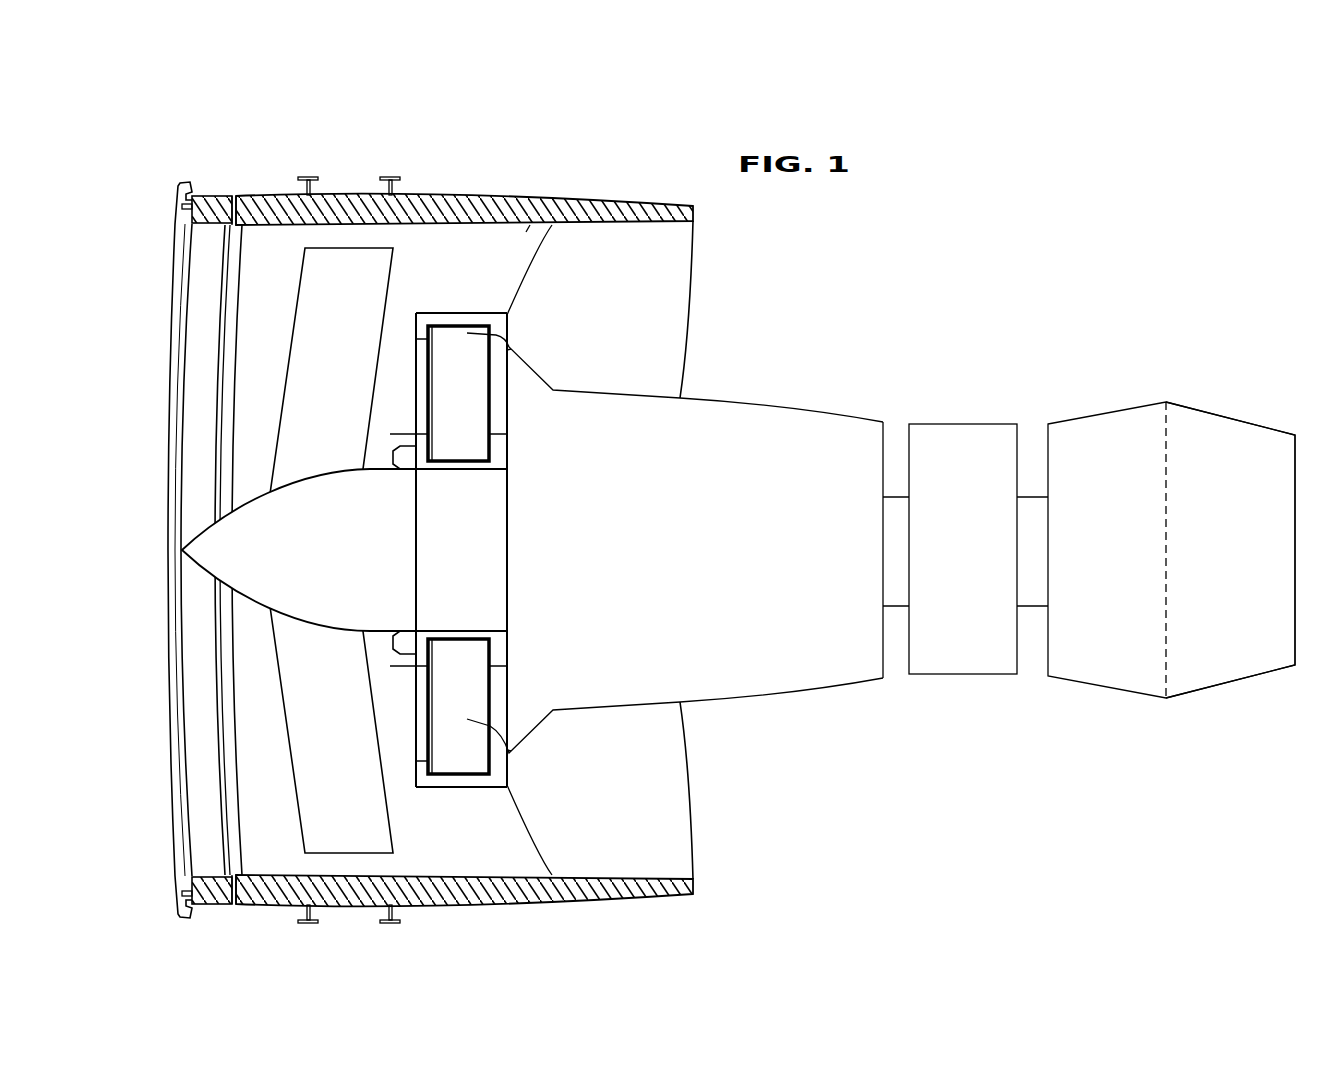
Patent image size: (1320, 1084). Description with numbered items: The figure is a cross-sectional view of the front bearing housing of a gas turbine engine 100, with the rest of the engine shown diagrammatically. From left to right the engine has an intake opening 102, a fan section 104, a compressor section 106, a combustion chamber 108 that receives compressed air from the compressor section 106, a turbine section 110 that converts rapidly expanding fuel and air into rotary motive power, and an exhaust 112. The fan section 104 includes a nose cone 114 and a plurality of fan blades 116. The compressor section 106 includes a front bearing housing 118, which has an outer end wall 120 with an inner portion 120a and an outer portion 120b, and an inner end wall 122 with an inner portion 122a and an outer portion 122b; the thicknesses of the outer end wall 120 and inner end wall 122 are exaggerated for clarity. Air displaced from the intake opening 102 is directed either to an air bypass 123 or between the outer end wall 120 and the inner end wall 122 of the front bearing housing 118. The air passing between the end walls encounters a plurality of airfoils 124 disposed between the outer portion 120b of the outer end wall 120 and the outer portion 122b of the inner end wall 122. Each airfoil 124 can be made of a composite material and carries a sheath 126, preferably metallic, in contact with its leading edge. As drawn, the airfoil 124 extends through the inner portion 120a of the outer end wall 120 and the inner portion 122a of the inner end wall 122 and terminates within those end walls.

The gas turbine engine 100 is at (186, 112).
The intake opening 102 is at (165, 310).
The fan section 104 is at (257, 632).
The compressor section 106 is at (786, 550).
The combustion chamber 108 is at (978, 549).
The turbine section 110 is at (1171, 550).
The exhaust 112 is at (1230, 550).
The nose cone 114 is at (213, 557).
The fan blades 116 is at (297, 400).
The front bearing housing 118 is at (407, 434).
The outer end wall 120 is at (509, 320).
The inner portion of the outer end wall 120a is at (507, 350).
The outer portion of the outer end wall 120b is at (487, 313).
The inner end wall 122 is at (509, 448).
The inner portion of the inner end wall 122a is at (505, 426).
The outer portion of the inner end wall 122b is at (509, 485).
The air bypass 123 is at (439, 246).
The airfoils 124 is at (507, 320).
The sheath 126 is at (427, 387).